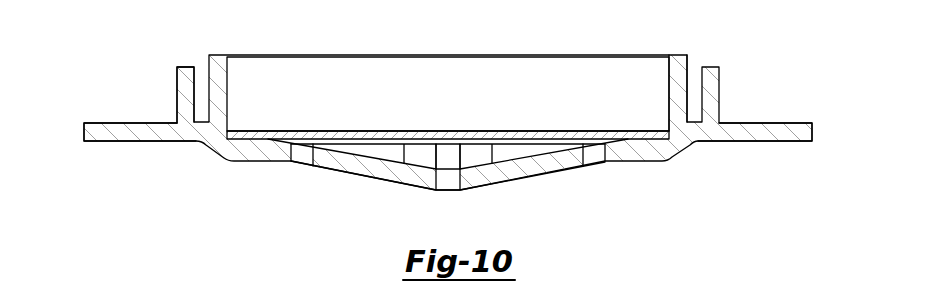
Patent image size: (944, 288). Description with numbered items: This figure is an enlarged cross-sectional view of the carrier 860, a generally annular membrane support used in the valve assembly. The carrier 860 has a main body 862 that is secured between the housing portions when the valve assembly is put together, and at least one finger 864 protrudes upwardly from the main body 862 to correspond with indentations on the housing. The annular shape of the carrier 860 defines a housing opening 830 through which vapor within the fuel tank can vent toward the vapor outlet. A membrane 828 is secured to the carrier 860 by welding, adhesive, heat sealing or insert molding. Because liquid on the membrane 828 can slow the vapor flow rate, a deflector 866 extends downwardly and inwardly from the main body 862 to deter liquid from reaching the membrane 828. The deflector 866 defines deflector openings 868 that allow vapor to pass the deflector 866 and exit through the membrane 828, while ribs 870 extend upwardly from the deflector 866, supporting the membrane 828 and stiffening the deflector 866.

The carrier 860 is at (137, 38).
The main body 862 is at (118, 135).
The finger 864 is at (191, 91).
The housing opening 830 is at (670, 111).
The membrane 828 is at (329, 132).
The deflector 866 is at (518, 169).
The deflector opening 868 is at (298, 155).
The ribs 870 is at (387, 154).